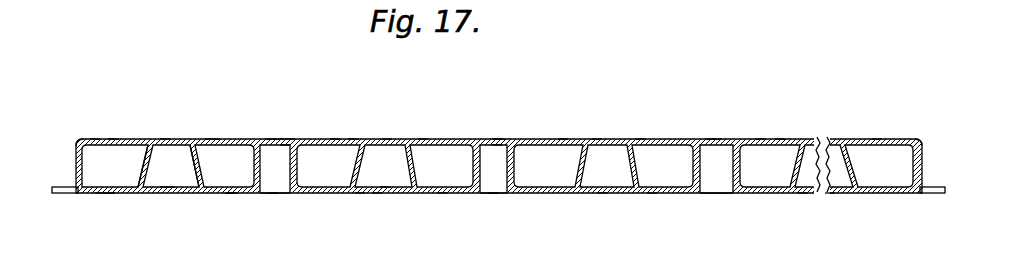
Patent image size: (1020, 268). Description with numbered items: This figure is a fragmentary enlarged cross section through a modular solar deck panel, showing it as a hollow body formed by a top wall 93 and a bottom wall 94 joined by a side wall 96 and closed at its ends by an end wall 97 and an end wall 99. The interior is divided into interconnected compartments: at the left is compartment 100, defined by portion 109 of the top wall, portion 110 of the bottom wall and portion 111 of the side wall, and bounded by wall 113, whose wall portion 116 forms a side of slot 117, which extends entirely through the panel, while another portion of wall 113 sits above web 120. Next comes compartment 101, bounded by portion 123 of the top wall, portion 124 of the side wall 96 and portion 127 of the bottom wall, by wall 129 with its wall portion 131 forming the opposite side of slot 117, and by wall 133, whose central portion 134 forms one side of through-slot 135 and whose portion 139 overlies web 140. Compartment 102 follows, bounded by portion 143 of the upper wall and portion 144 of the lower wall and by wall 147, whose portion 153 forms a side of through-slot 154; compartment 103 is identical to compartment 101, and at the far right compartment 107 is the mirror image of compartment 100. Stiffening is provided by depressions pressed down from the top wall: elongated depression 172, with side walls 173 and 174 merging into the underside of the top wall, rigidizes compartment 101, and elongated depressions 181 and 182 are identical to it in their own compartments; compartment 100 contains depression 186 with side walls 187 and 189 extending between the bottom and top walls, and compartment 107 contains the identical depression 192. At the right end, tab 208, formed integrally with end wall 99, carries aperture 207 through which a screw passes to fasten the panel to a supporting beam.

The compartment 100 is at (165, 138).
The top wall 93 is at (213, 138).
The side wall 96 is at (113, 138).
The end wall 97 is at (63, 138).
The end wall 99 is at (942, 125).
The portion of top wall 109 is at (95, 138).
The aperture 207 is at (62, 165).
The tab 208 is at (936, 187).
The portion of bottom wall 110 is at (100, 195).
The portion of side wall 111 is at (103, 147).
The wall 113 is at (270, 140).
The wall portion 116 is at (278, 140).
The slot 117 is at (273, 195).
The web 120 is at (280, 195).
The portion of top wall 123 is at (423, 140).
The portion of side wall 124 is at (353, 140).
The portion of bottom wall 127 is at (437, 170).
The wall 129 is at (283, 140).
The wall portion 131 is at (288, 140).
The wall 133 is at (497, 140).
The central portion 134 is at (500, 140).
The through-slot 135 is at (493, 195).
The portion 139 is at (497, 140).
The web 140 is at (493, 200).
The portion of upper wall 143 is at (644, 162).
The portion of lower wall 144 is at (650, 168).
The wall 147 is at (705, 195).
The portion 153 is at (710, 140).
The through-slot 154 is at (717, 140).
The compartment 101 is at (387, 140).
The compartment 102 is at (597, 140).
The compartment 103 is at (760, 140).
The compartment 107 is at (877, 140).
The elongated depression 172 is at (377, 195).
The side wall 173 is at (373, 208).
The side wall 174 is at (383, 157).
The elongated depression 181 is at (603, 153).
The elongated depression 182 is at (803, 195).
The depression 186 is at (167, 160).
The side wall 187 is at (143, 195).
The side wall 189 is at (180, 170).
The depression 192 is at (838, 165).
The bottom wall 94 is at (233, 163).